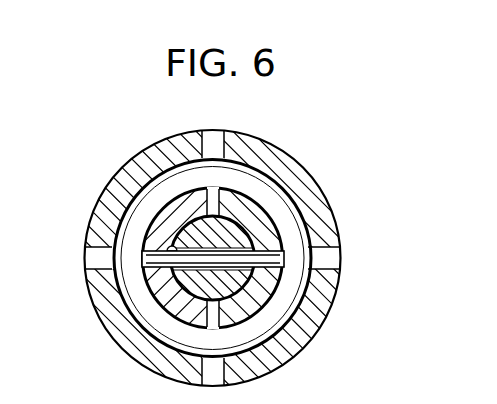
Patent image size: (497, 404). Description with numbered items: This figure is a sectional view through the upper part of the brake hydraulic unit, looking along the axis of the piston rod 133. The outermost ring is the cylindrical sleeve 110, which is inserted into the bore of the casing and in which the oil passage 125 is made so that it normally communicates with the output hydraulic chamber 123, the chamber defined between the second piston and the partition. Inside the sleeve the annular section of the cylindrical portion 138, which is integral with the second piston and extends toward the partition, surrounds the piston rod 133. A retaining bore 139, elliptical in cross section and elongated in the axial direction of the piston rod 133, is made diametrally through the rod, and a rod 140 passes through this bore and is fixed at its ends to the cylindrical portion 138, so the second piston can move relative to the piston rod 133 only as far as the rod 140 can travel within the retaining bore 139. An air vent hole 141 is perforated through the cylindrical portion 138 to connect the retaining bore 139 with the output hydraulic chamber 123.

The cylindrical sleeve 110 is at (160, 143).
The output hydraulic chamber 123 is at (275, 195).
The oil passage 125 is at (333, 258).
The piston rod 133 is at (217, 228).
The cylindrical portion 138 is at (256, 313).
The retaining bore 139 is at (176, 245).
The rod 140 is at (146, 266).
The air vent hole 141 is at (198, 332).